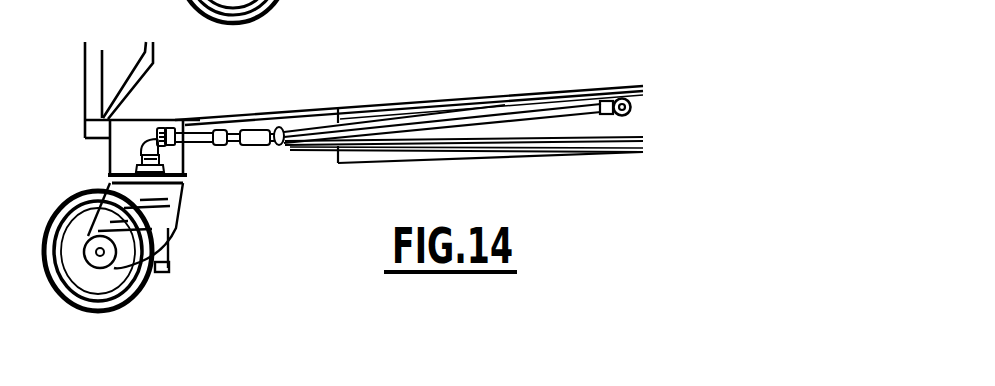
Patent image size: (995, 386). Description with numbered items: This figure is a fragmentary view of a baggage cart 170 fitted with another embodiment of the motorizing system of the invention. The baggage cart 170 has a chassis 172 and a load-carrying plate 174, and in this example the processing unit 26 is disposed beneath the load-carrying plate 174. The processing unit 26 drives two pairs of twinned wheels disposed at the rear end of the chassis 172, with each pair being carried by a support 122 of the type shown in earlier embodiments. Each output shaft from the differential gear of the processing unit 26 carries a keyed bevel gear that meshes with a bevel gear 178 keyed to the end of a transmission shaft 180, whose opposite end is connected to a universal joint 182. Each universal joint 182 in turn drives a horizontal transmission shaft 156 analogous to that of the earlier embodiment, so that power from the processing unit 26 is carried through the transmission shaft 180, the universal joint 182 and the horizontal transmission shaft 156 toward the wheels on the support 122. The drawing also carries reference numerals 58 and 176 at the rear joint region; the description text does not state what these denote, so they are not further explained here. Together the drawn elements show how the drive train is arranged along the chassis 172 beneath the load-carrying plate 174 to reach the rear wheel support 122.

The baggage cart 170 is at (400, 78).
The horizontal transmission shaft 156 is at (203, 119).
The universal joint 182 is at (260, 147).
The load-carrying plate 174 is at (548, 97).
The transmission shaft 180 is at (497, 117).
The bevel gear 178 is at (616, 98).
The pivot pin 58 is at (633, 103).
The link 176 is at (629, 115).
The chassis 172 is at (562, 148).
The processing unit 26 is at (376, 154).
The support 122 is at (158, 212).